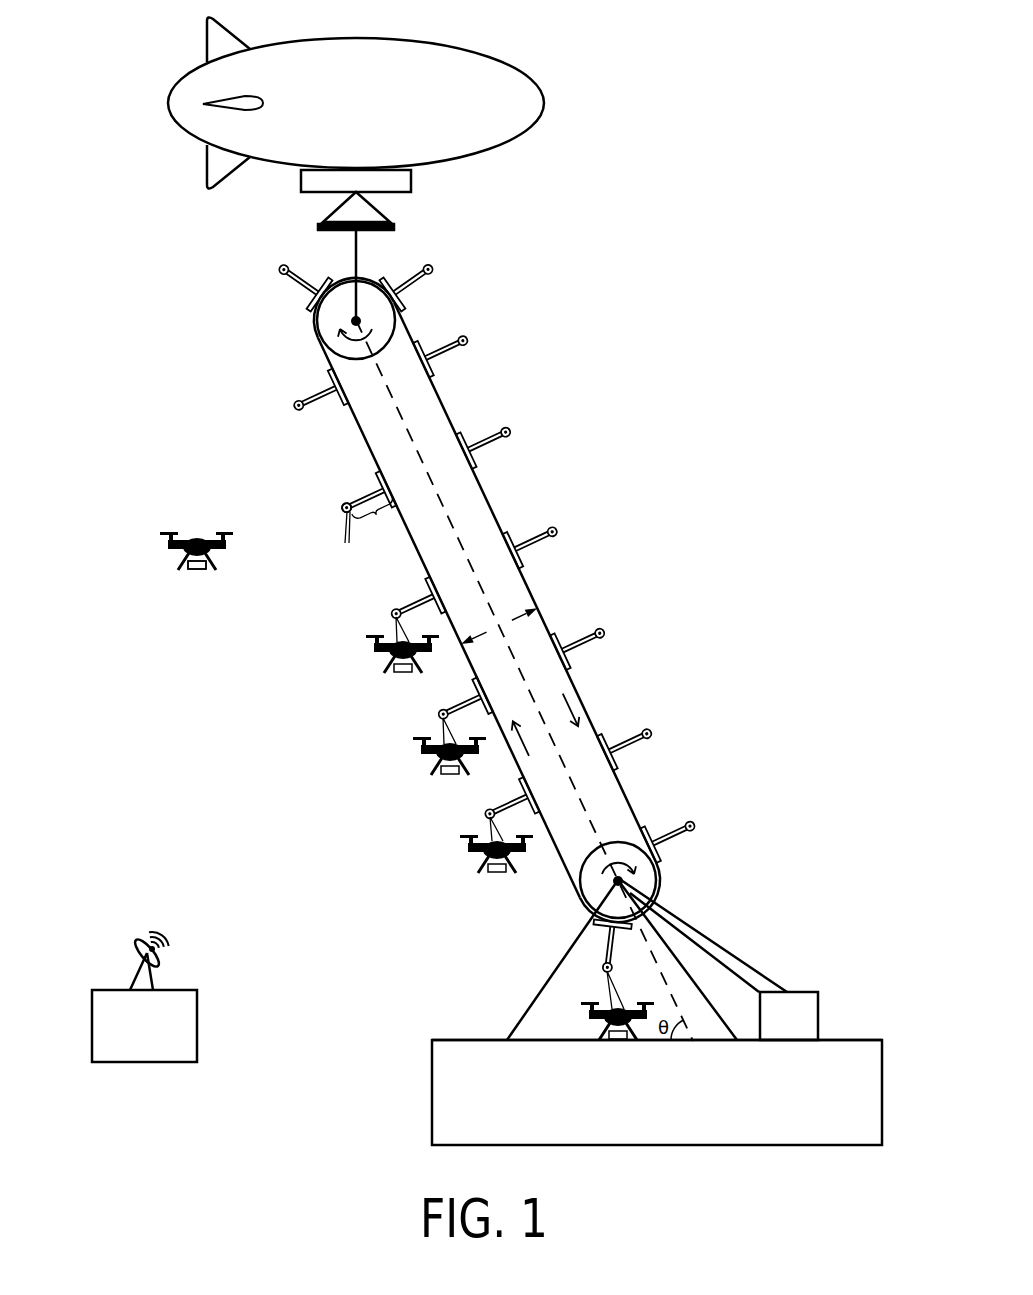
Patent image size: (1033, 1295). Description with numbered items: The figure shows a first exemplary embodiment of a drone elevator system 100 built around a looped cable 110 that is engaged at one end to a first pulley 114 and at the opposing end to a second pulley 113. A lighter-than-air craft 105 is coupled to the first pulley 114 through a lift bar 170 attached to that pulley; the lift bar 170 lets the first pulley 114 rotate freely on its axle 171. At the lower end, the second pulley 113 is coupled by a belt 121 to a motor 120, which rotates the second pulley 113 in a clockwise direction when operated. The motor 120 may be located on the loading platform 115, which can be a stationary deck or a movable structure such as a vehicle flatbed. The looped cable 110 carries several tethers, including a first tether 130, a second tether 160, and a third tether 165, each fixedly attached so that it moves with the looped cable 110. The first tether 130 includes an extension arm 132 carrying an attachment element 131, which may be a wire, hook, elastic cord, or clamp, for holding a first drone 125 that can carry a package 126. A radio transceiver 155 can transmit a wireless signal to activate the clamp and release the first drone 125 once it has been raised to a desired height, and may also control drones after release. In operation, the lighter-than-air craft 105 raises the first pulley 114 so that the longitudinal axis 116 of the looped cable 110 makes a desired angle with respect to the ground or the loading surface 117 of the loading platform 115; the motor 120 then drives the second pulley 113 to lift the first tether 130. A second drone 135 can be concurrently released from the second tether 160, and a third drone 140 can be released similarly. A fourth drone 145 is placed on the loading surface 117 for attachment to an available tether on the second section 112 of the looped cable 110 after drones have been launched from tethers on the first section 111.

The drone elevator system 100 is at (825, 110).
The lighter-than-air craft 105 is at (378, 119).
The looped cable 110 is at (477, 620).
The first section 111 is at (425, 570).
The second section 112 is at (497, 518).
The second pulley 113 is at (630, 825).
The first pulley 114 is at (414, 327).
The loading platform 115 is at (665, 1102).
The longitudinal axis 116 is at (449, 516).
The loading surface 117 is at (447, 1028).
The motor 120 is at (809, 1030).
The belt 121 is at (712, 918).
The first drone 125 is at (161, 530).
The package 126 is at (197, 574).
The first tether 130 is at (323, 483).
The attachment element 131 is at (328, 504).
The extension arm 132 is at (353, 498).
The second drone 135 is at (340, 649).
The third drone 140 is at (378, 737).
The fourth drone 145 is at (562, 993).
The radio transceiver 155 is at (164, 1034).
The second tether 160 is at (376, 596).
The third tether 165 is at (425, 699).
The lift bar 170 is at (414, 225).
The axle 171 is at (352, 322).